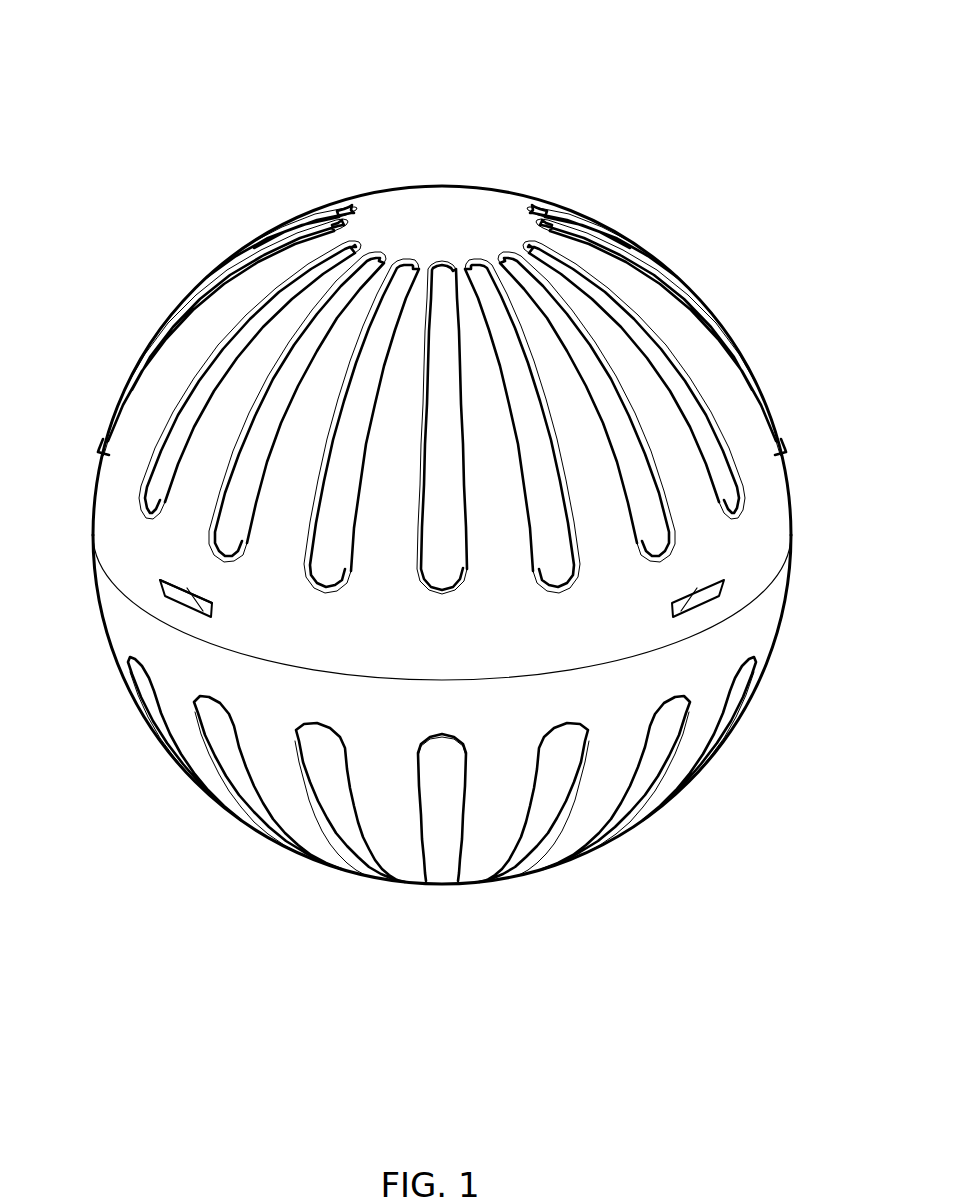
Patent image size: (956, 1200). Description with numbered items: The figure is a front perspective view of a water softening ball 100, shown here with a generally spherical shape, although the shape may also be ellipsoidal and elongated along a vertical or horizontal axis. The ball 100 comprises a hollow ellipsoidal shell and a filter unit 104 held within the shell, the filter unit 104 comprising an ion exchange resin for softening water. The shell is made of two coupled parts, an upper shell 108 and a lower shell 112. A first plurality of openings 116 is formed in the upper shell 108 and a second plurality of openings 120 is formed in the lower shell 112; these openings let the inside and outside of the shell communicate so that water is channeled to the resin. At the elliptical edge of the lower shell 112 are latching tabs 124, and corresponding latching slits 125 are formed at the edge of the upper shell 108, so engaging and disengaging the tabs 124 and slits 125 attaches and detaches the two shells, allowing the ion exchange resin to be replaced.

The water softening ball 100 is at (683, 105).
The filter unit 104 is at (442, 380).
The upper shell 108 is at (742, 552).
The lower shell 112 is at (740, 628).
The first plurality of openings 116 is at (175, 408).
The second plurality of openings 120 is at (233, 763).
The latching tabs 124 is at (183, 598).
The latching slits 125 is at (190, 590).